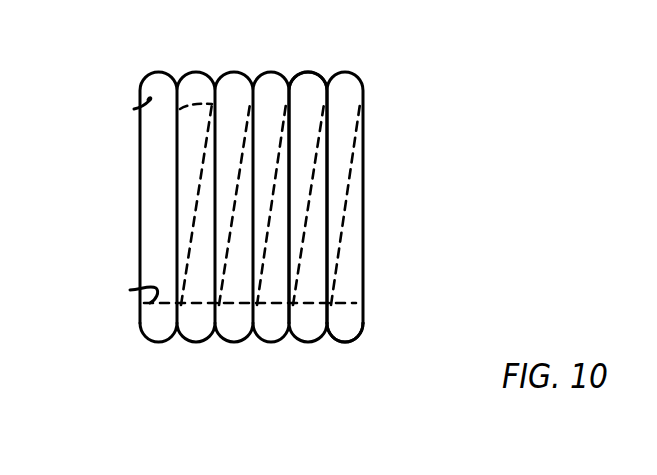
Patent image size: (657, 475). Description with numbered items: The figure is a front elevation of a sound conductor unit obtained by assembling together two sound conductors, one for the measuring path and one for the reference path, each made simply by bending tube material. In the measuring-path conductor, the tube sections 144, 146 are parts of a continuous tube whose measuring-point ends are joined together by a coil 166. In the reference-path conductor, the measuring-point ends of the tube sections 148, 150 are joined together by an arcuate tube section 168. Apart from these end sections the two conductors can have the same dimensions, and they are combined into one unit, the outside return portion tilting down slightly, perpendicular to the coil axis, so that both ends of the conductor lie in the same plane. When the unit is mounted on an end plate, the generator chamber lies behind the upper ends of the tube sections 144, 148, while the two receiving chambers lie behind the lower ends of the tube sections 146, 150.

The tube section 144 is at (198, 101).
The tube section 146 is at (313, 310).
The tube section 148 is at (134, 109).
The tube section 150 is at (130, 290).
The coil 166 is at (311, 100).
The arcuate tube section 168 is at (160, 193).